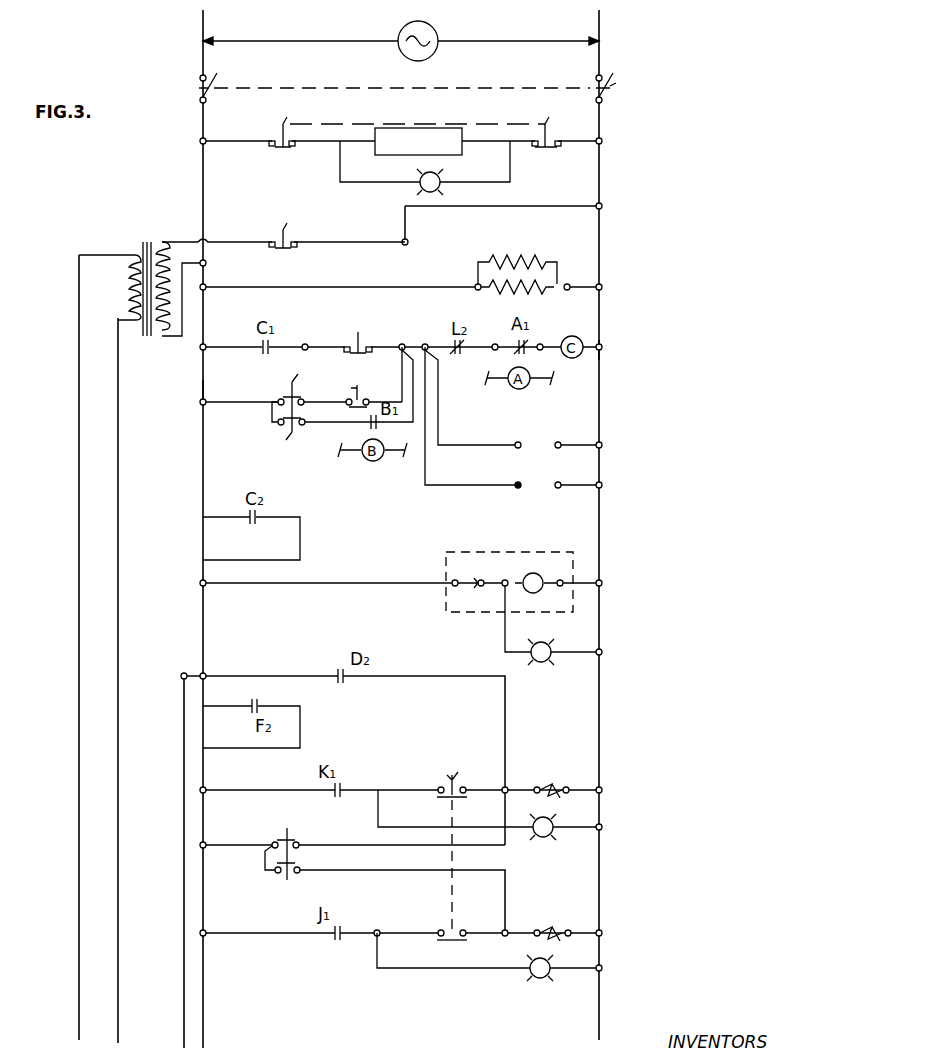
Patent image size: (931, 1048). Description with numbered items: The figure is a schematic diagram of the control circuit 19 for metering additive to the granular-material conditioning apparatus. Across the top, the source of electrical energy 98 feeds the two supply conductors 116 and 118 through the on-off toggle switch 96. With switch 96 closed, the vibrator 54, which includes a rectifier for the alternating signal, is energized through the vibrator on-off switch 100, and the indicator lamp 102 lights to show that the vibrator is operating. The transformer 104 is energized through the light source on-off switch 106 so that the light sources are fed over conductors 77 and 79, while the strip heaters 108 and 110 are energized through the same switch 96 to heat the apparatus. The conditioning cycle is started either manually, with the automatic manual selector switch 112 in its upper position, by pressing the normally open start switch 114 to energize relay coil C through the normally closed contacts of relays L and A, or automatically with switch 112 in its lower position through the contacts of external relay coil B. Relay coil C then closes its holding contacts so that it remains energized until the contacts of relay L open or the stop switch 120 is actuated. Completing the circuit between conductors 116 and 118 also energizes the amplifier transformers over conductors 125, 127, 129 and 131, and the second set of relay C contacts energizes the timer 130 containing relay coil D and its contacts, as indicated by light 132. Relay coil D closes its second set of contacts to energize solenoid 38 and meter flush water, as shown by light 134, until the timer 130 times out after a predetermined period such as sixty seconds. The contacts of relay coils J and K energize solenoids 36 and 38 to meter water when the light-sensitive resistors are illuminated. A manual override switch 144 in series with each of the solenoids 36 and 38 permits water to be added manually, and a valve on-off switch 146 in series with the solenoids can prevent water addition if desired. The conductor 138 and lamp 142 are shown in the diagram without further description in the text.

The control circuit 19 is at (614, 254).
The solenoid 36 is at (544, 932).
The solenoid 38 is at (547, 790).
The vibrator 54 is at (406, 128).
The conductor 77 is at (78, 948).
The conductor 79 is at (118, 926).
The on-off toggle switch 96 is at (606, 90).
The source of electrical energy 98 is at (430, 38).
The vibrator on-off switch 100 is at (281, 146).
The indicator lamp 102 is at (402, 188).
The transformer 104 is at (143, 250).
The light source on-off switch 106 is at (277, 248).
The strip heater 108 is at (546, 292).
The strip heater 110 is at (496, 260).
The automatic manual selector switch 112 is at (288, 428).
The start switch 114 is at (356, 396).
The conductor 116 is at (203, 388).
The conductor 118 is at (600, 340).
The stop switch 120 is at (364, 342).
The conductor 125 is at (497, 446).
The conductor 127 is at (575, 449).
The conductor 129 is at (494, 486).
The timer 130 is at (484, 555).
The conductor 131 is at (580, 493).
The light 132 is at (540, 664).
The light 134 is at (539, 838).
The conductor line 138 is at (184, 1038).
The indicator lamp 142 is at (535, 976).
The manual override switch 144 is at (280, 840).
The valve on-off switch 146 is at (446, 780).